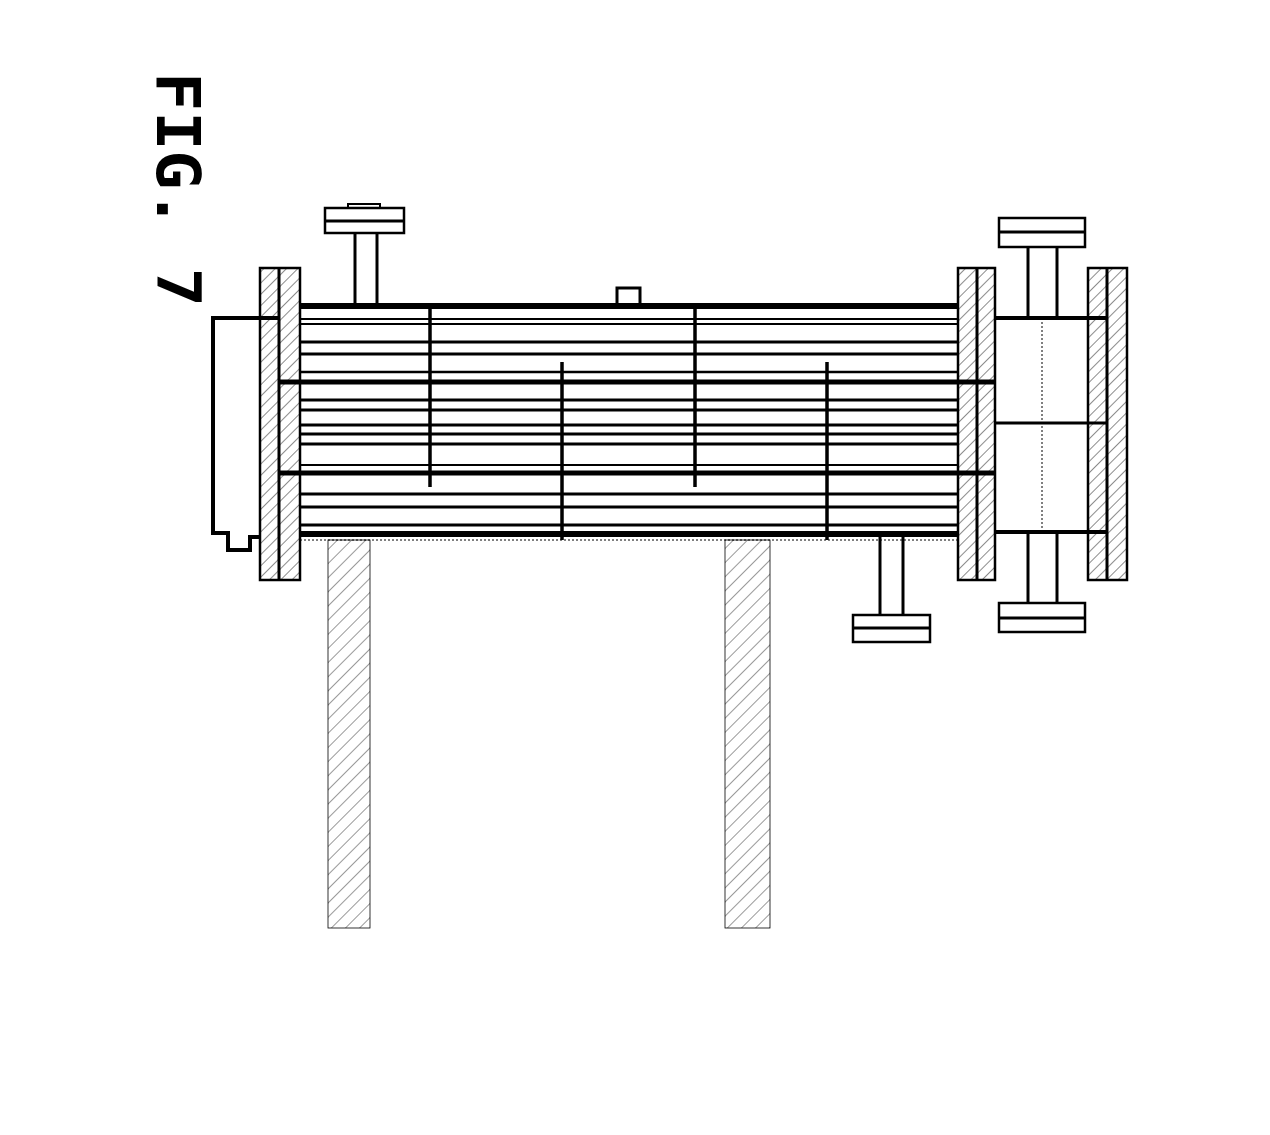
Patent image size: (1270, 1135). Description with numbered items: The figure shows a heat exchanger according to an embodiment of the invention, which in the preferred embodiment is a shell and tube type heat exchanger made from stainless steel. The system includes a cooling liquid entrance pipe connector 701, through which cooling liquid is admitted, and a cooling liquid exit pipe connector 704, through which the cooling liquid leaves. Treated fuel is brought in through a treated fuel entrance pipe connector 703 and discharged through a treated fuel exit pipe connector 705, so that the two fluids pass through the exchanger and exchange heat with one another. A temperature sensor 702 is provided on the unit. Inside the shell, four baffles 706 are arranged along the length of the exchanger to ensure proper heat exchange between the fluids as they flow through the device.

The cooling liquid entrance pipe connector 701 is at (405, 216).
The temperature sensor 702 is at (625, 286).
The treated fuel entrance pipe connector 703 is at (1086, 224).
The cooling liquid exit pipe connector 704 is at (905, 645).
The treated fuel exit pipe connector 705 is at (1086, 634).
The baffles 706 is at (569, 545).